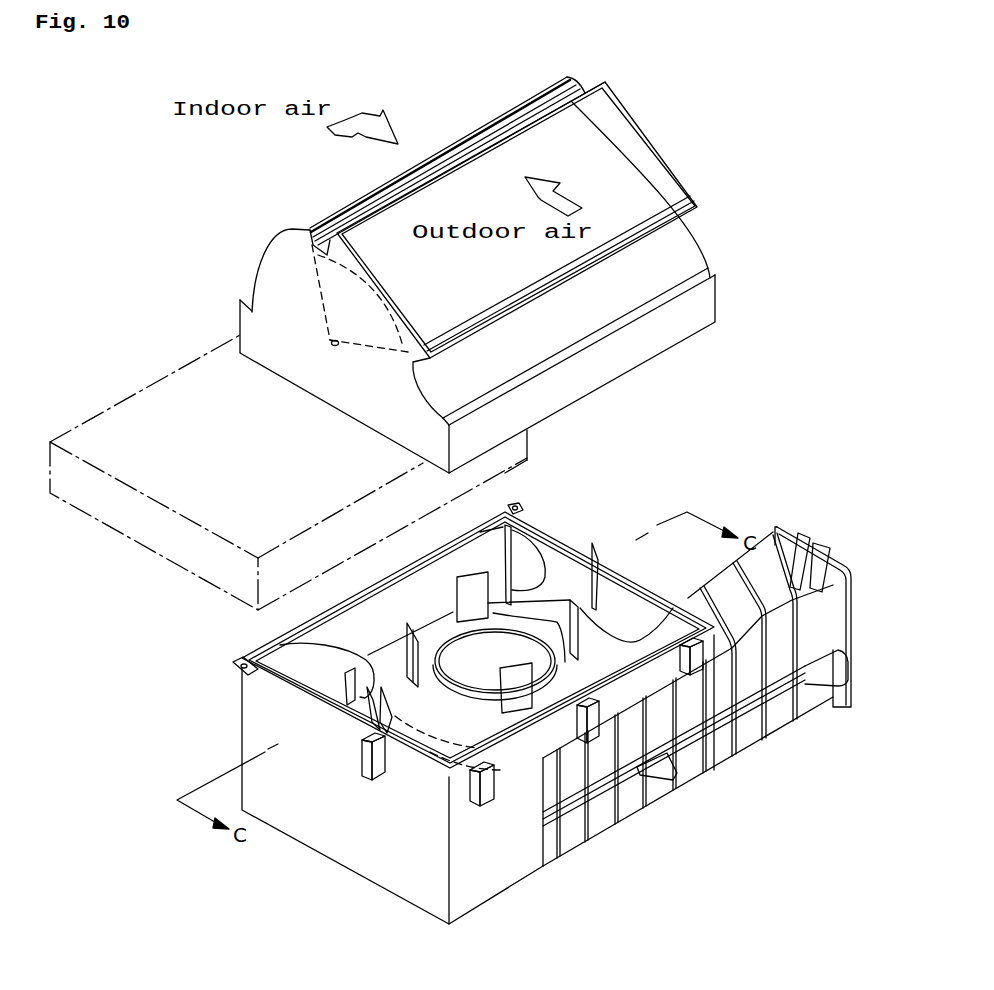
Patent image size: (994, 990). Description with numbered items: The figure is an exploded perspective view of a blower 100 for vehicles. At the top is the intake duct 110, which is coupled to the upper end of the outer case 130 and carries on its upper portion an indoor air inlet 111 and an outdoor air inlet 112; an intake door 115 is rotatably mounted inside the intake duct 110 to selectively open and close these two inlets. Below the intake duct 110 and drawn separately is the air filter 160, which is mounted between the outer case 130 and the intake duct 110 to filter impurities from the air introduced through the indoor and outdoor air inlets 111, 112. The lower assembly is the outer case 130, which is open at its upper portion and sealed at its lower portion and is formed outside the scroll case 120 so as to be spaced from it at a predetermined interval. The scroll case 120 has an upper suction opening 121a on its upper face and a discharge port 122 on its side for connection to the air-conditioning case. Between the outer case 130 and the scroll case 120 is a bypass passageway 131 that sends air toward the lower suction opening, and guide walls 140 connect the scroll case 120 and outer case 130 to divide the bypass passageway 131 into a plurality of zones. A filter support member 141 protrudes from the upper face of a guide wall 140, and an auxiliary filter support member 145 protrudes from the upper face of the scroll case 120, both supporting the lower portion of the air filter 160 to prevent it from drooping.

The blower 100 is at (788, 365).
The intake duct 110 is at (656, 367).
The indoor air inlet 111 is at (506, 108).
The outdoor air inlet 112 is at (622, 126).
The intake door 115 is at (371, 360).
The scroll case 120 is at (257, 647).
The upper suction opening 121a is at (475, 647).
The discharge port 122 is at (853, 594).
The outer case 130 is at (232, 720).
The bypass passageway 131 is at (305, 672).
The guide wall 140 is at (348, 654).
The filter support member 141 is at (506, 508).
The auxiliary filter support member 145 is at (515, 700).
The air filter 160 is at (183, 363).